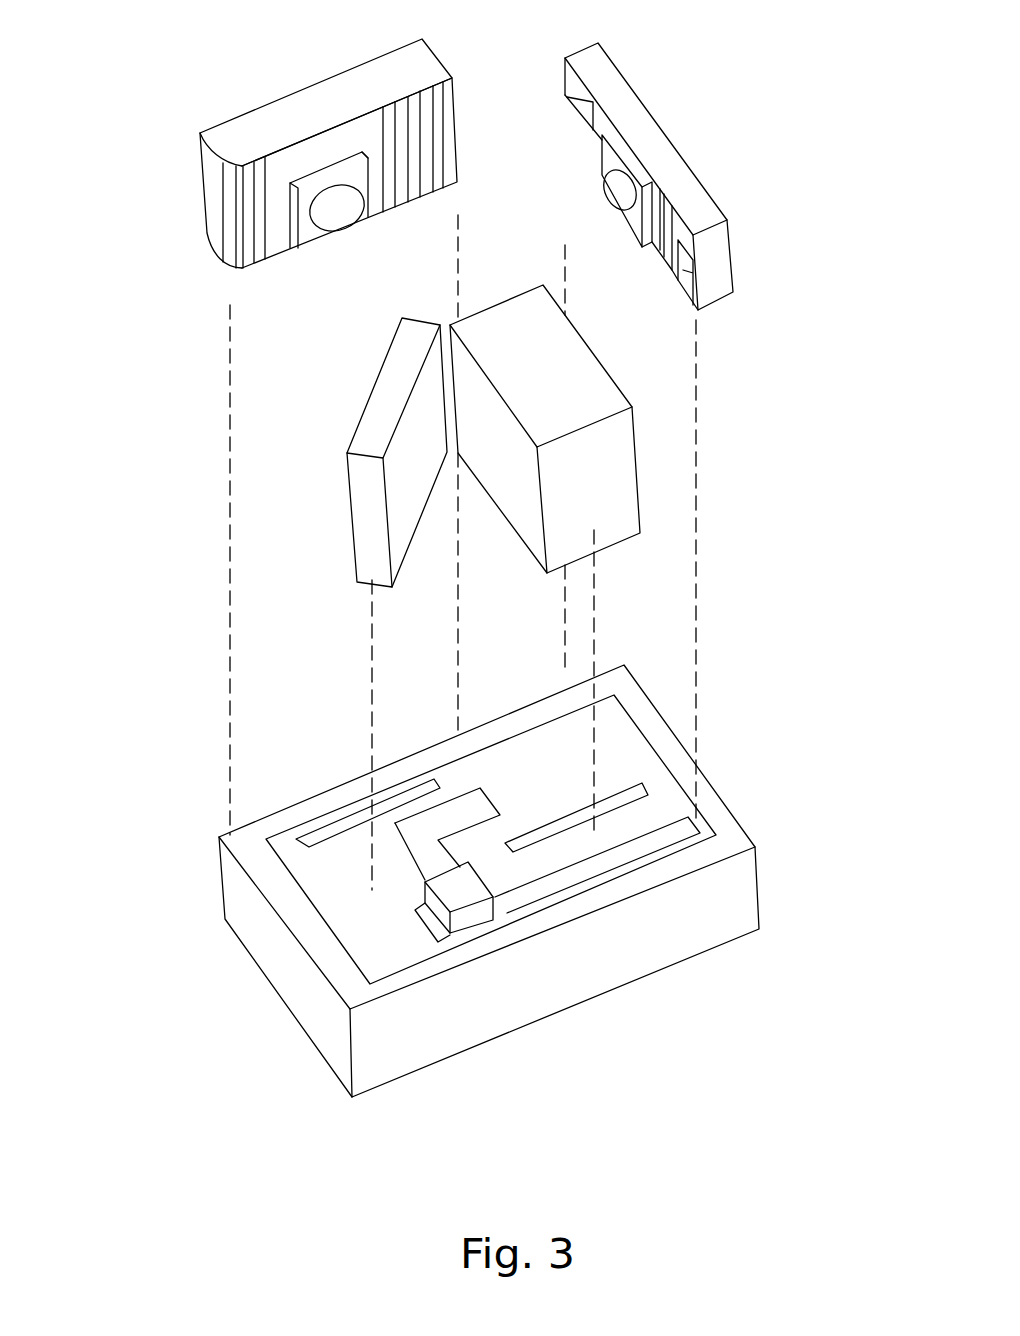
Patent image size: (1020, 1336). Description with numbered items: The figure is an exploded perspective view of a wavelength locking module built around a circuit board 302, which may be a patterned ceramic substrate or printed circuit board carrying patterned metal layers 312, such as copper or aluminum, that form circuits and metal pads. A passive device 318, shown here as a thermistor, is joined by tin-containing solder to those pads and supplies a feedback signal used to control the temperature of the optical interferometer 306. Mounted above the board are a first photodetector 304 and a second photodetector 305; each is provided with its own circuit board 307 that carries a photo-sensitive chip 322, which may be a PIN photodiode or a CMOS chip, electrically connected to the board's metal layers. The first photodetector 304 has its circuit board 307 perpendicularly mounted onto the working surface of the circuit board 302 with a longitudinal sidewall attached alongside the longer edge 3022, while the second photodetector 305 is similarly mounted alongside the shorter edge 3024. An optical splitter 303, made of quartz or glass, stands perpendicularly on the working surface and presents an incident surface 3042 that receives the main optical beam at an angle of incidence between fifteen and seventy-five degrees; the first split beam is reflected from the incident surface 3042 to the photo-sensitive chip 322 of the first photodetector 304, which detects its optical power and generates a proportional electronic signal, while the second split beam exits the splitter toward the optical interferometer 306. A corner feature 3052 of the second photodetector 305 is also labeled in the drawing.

The circuit board 302 is at (484, 881).
The longer edge 3022 is at (321, 790).
The shorter edge 3024 is at (712, 779).
The optical splitter 303 is at (365, 485).
The first photodetector 304 is at (266, 159).
The incident surface 3042 is at (281, 258).
The second photodetector 305 is at (699, 172).
The end portion of second lens frame 3052 is at (718, 300).
The optical interferometer 306 is at (613, 477).
The circuit board 307 is at (257, 128).
The patterned metal layers 312 is at (653, 843).
The passive device 318 is at (468, 915).
The photo-sensitive chip 322 is at (342, 202).